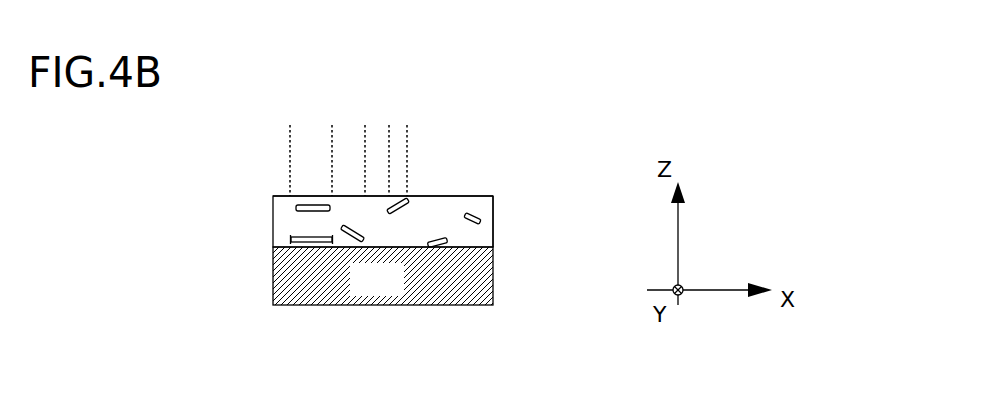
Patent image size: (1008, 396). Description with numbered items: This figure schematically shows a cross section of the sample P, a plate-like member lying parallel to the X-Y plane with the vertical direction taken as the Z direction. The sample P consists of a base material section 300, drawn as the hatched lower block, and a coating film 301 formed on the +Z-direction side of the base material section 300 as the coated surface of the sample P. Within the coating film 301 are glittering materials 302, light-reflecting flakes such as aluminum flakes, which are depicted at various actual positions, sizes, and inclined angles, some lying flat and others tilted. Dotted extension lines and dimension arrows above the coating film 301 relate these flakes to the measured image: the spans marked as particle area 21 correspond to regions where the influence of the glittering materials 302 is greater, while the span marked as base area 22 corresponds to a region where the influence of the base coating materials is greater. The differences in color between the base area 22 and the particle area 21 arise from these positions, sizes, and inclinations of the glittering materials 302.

The base material section 300 is at (400, 292).
The coating film 301 is at (273, 216).
The glittering materials 302 is at (448, 240).
The particle area 21 is at (332, 162).
The base area 22 is at (389, 177).
The sample P is at (496, 190).